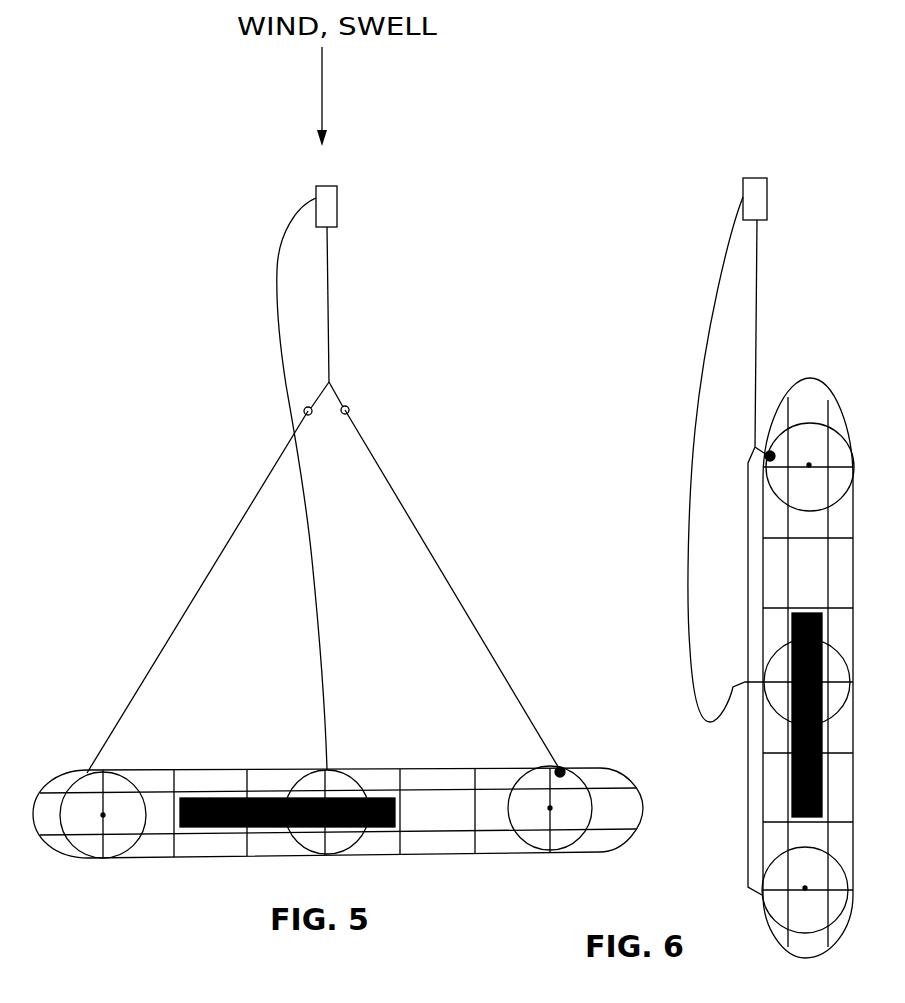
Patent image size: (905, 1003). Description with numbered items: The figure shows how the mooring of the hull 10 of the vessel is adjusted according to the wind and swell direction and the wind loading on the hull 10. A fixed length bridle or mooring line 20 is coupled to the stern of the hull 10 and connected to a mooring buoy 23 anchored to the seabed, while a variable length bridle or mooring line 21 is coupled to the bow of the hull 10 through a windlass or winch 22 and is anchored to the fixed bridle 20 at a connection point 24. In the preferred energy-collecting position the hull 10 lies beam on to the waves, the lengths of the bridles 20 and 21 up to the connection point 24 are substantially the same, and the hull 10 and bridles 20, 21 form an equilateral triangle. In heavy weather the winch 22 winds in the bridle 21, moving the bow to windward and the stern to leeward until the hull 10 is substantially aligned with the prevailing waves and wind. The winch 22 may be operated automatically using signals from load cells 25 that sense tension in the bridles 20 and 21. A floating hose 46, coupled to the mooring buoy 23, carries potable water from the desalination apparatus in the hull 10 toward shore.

In FIG. 5, the hull 10 is at (439, 864).
In FIG. 6, the hull 10 is at (737, 768).
In FIG. 5, the fixed length bridle 20 is at (232, 530).
In FIG. 5, the variable length bridle 21 is at (393, 488).
In FIG. 6, the variable length bridle 21 is at (760, 288).
In FIG. 5, the winch 22 is at (563, 767).
In FIG. 6, the winch 22 is at (740, 442).
In FIG. 5, the mooring buoy 23 is at (337, 205).
In FIG. 5, the connection point 24 is at (331, 378).
In FIG. 5, the load cells 25 is at (314, 408).
In FIG. 5, the floating hose 46 is at (278, 328).